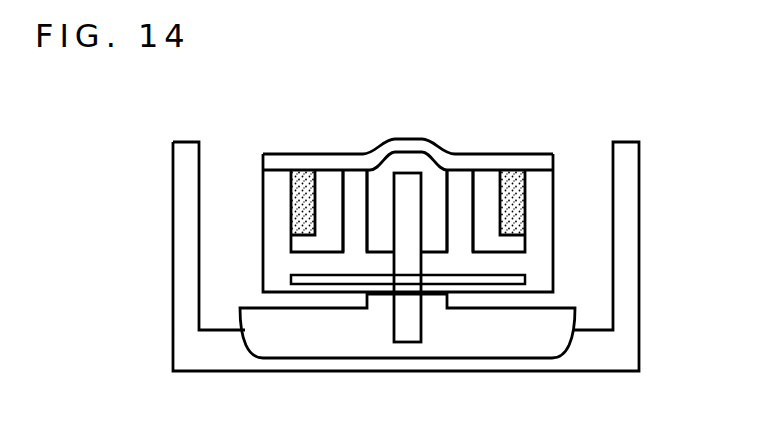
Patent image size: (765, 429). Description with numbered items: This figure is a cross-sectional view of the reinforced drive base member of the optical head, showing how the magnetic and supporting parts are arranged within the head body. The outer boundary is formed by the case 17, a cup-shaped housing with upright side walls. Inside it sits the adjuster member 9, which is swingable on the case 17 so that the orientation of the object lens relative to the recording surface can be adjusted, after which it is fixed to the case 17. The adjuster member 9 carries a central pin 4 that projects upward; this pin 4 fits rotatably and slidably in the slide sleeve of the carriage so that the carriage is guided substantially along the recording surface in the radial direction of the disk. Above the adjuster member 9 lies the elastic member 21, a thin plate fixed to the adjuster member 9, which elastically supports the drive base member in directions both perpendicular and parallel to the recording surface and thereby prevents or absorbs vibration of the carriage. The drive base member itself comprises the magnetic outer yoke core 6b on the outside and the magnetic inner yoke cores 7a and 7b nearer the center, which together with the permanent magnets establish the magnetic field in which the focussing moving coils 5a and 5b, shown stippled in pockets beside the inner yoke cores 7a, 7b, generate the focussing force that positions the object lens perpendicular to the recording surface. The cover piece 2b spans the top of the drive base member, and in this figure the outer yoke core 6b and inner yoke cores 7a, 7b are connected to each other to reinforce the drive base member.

The case 17 is at (632, 252).
The magnetic outer yoke core 6b is at (278, 202).
The cover plate 2b is at (412, 150).
The focussing moving coil 5a is at (518, 173).
The focussing moving coil 5b is at (303, 175).
The magnetic inner yoke core 7a is at (462, 180).
The magnetic inner yoke core 7b is at (353, 185).
The elastic member 21 is at (265, 292).
The pin 4 is at (400, 343).
The adjuster member 9 is at (498, 343).